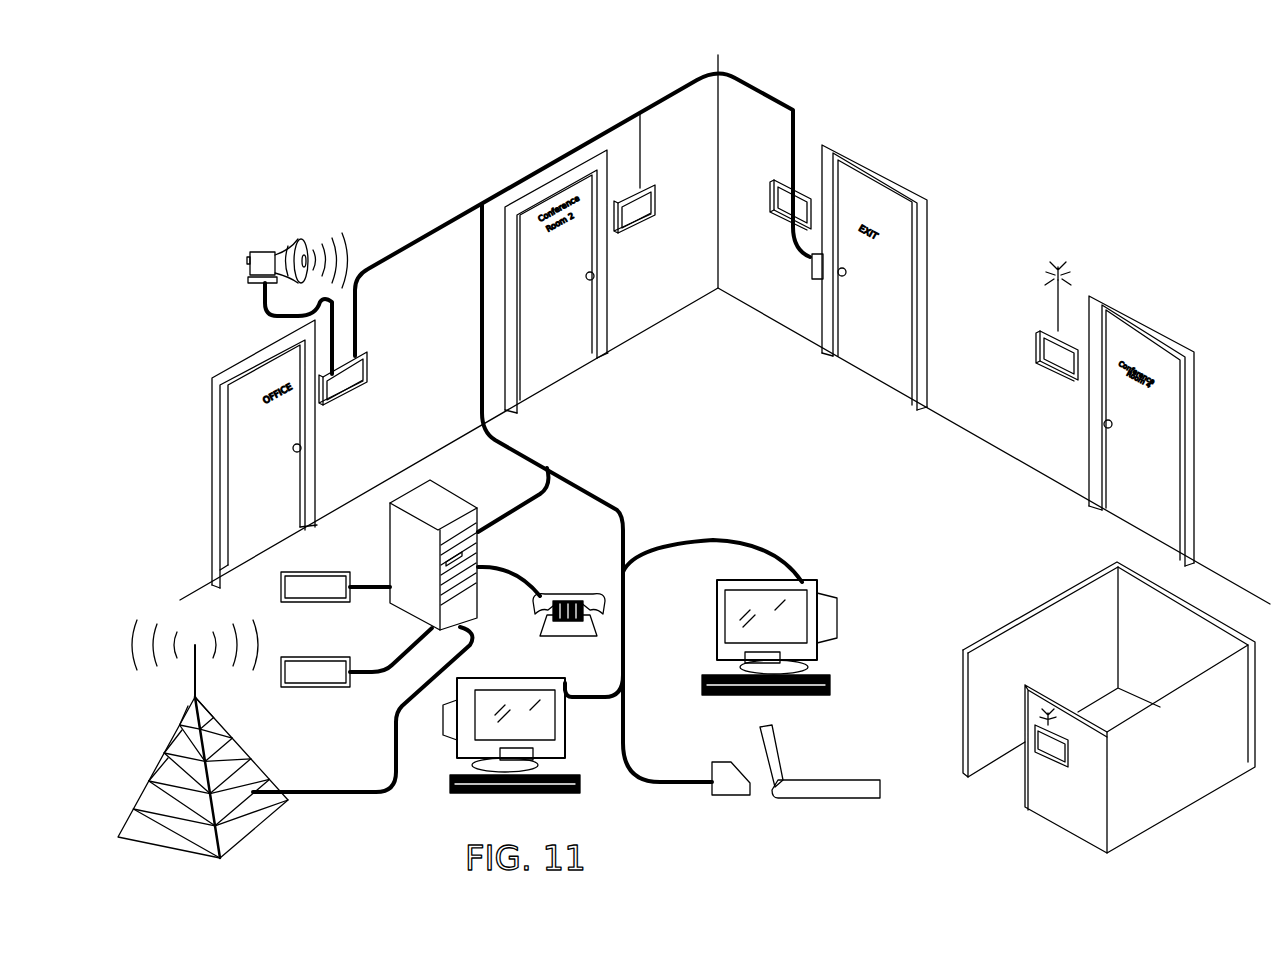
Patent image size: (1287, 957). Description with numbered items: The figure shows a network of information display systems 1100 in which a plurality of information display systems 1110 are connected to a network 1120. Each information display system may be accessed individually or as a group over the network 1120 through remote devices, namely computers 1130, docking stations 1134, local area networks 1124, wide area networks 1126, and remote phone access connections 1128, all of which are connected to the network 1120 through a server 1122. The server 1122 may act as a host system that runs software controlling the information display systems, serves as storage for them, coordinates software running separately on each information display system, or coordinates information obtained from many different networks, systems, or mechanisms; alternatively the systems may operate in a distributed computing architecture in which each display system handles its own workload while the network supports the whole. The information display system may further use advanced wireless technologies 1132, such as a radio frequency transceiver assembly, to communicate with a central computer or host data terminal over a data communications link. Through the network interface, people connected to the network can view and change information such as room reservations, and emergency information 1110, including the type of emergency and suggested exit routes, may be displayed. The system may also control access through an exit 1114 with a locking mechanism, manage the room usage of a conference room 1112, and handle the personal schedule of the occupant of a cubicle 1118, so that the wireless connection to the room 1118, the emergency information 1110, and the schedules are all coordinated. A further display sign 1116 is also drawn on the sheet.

The network of information display systems 1100 is at (1000, 127).
The information display system 1110 is at (370, 367).
The conference room 1112 is at (652, 215).
The exit 1114 is at (778, 213).
The wireless display sign near conference room 4 1116 is at (1052, 368).
The cubicle 1118 is at (1057, 752).
The network 1120 is at (448, 220).
The server 1122 is at (440, 503).
The local area network 1124 is at (292, 603).
The wide area network 1126 is at (297, 688).
The remote phone access connection 1128 is at (570, 625).
The computer 1130 is at (828, 615).
The advanced wireless technologies 1132 is at (220, 833).
The docking station 1134 is at (720, 775).